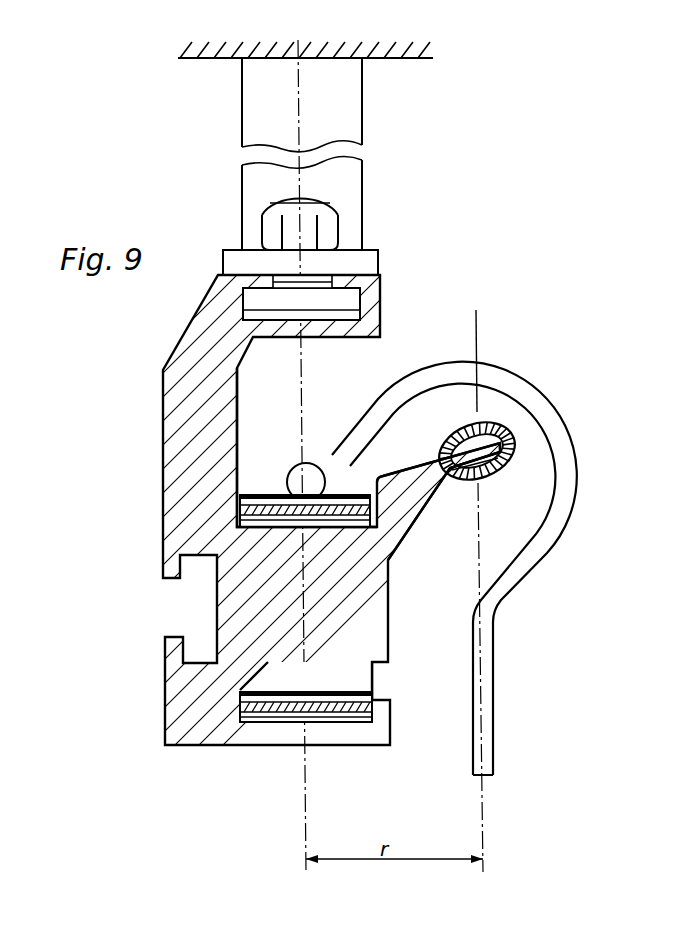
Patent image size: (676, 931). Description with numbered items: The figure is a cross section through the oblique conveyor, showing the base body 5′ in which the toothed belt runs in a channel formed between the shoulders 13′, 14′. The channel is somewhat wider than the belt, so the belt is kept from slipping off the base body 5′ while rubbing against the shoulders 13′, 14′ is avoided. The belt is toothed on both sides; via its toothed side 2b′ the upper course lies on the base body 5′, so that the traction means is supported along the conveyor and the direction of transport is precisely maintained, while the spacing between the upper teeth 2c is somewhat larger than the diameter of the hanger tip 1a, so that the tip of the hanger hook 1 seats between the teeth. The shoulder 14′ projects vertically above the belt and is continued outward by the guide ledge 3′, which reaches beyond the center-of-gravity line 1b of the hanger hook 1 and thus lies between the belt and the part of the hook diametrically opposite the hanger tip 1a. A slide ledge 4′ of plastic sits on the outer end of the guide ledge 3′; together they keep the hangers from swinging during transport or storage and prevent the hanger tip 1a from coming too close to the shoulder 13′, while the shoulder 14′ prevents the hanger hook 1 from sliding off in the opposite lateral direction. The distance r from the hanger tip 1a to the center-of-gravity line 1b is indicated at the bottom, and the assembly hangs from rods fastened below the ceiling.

The hanger hook 1 is at (520, 403).
The hanger tip 1a is at (312, 466).
The center-of-gravity line 1b is at (479, 577).
The toothed side 2b′ is at (337, 713).
The upper teeth 2c is at (260, 722).
The guide ledge 3′ is at (513, 466).
The slide ledge 4′ is at (497, 484).
The base body 5′ is at (177, 409).
The shoulder 13′ is at (237, 422).
The shoulder 14′ is at (368, 475).